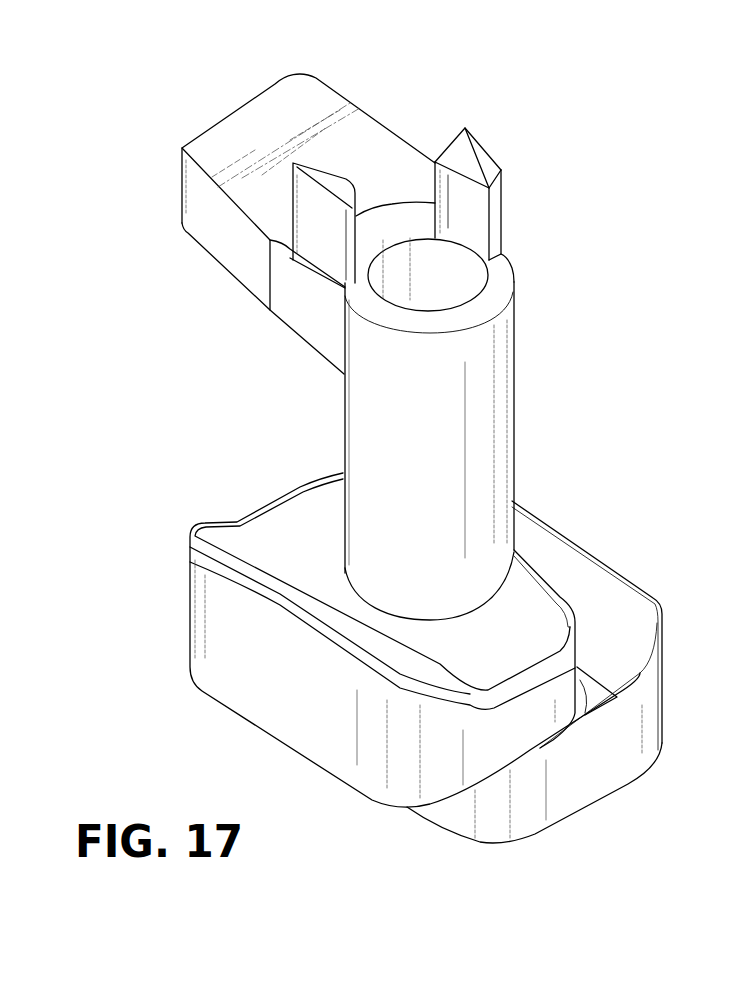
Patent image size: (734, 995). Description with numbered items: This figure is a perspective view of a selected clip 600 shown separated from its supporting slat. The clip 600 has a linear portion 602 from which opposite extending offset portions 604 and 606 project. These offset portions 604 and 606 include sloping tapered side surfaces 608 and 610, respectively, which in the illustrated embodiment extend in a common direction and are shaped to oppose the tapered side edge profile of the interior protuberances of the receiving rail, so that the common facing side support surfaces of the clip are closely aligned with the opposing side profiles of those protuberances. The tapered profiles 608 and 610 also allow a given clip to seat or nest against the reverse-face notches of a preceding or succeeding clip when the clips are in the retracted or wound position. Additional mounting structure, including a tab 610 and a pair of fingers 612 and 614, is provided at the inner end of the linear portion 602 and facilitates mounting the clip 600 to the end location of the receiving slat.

The clip 600 is at (643, 332).
The linear portion 602 is at (500, 398).
The extending portion 604 is at (307, 510).
The extending portion 606 is at (603, 694).
The tapered side surface 608 is at (228, 543).
The tapered side surface 610 is at (225, 242).
The finger 612 is at (318, 184).
The finger 614 is at (470, 200).